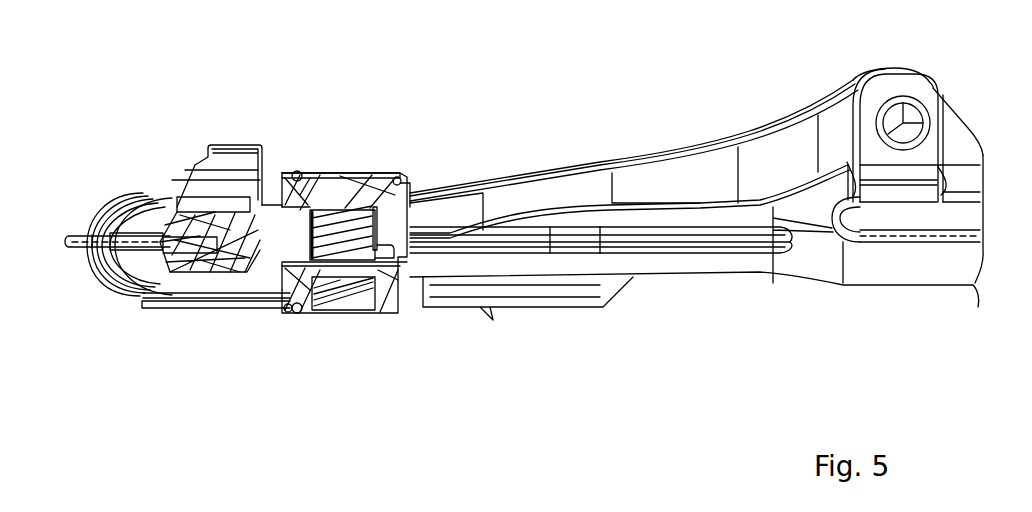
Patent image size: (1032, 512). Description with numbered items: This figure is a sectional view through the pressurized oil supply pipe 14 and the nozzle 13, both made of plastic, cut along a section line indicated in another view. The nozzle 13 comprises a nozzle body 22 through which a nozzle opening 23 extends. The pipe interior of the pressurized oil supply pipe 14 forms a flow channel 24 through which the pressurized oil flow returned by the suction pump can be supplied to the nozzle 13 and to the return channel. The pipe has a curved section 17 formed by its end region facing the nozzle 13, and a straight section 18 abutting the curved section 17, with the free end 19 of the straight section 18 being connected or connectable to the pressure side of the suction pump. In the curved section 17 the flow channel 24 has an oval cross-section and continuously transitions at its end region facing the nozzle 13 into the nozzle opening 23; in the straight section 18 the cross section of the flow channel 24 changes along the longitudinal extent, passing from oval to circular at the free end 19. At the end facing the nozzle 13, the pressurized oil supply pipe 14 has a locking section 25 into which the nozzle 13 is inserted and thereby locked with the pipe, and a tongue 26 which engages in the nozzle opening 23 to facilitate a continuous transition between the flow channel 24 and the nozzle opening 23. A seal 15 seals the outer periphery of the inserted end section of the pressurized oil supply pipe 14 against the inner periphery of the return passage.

The nozzle 13 is at (365, 312).
The pressurized oil supply pipe 14 is at (740, 277).
The seal 15 is at (295, 172).
The curved section 17 is at (150, 213).
The straight section 18 is at (678, 262).
The free end 19 is at (977, 283).
The nozzle body 22 is at (393, 170).
The nozzle opening 23 is at (357, 207).
The flow channel 24 is at (277, 250).
The locking section 25 is at (315, 210).
The tongue 26 is at (335, 310).